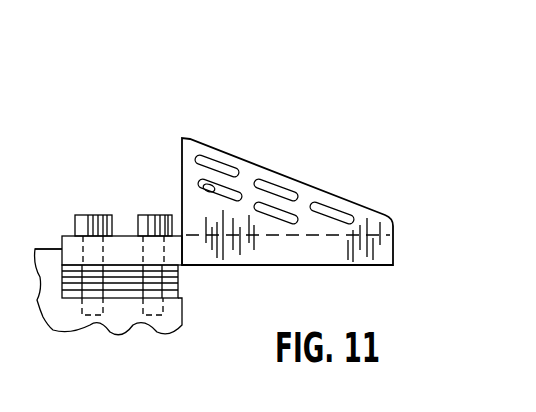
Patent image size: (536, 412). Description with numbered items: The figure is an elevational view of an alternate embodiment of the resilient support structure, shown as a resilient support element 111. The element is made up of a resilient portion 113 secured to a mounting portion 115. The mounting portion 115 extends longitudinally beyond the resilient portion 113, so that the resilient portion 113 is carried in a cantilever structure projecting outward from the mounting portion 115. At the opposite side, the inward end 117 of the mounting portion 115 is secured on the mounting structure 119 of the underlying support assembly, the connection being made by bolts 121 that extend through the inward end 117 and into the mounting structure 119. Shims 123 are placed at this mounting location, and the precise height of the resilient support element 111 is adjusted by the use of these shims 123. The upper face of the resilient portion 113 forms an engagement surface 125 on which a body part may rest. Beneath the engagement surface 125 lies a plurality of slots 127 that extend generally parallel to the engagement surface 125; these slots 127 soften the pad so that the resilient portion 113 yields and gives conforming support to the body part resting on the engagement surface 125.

The resilient support element 111 is at (293, 160).
The resilient portion 113 is at (305, 188).
The mounting portion 115 is at (120, 235).
The inward end 117 is at (60, 249).
The mounting structure 119 is at (100, 273).
The bolts 121 is at (78, 215).
The shims 123 is at (177, 278).
The engagement surface 125 is at (258, 161).
The slots 127 is at (233, 172).